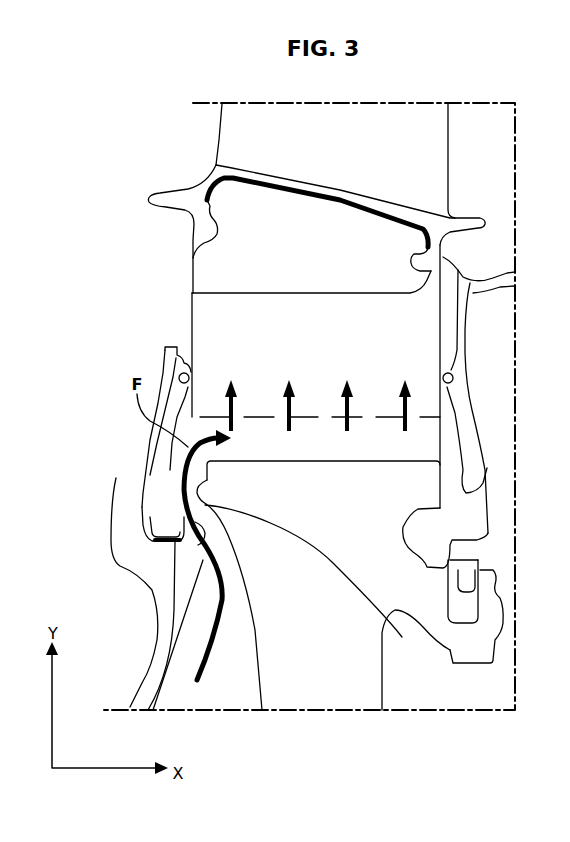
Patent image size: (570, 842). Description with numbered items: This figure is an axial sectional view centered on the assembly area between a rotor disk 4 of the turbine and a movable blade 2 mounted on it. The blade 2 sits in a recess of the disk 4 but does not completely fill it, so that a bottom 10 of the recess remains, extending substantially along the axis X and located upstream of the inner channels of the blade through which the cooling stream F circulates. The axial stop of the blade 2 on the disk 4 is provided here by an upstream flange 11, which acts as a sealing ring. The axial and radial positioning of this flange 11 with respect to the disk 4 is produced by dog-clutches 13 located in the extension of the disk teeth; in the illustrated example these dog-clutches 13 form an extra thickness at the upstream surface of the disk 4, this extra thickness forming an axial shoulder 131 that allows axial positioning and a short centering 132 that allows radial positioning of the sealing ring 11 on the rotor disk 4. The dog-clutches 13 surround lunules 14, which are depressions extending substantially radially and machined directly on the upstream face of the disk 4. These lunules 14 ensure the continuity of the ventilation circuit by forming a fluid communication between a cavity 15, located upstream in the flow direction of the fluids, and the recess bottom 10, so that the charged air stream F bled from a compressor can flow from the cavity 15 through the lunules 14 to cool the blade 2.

The movable blade 2 is at (422, 152).
The rotor disk 4 is at (330, 663).
The recess bottom 10 is at (303, 447).
The upstream flange 11 is at (160, 657).
The dog-clutch 13 is at (173, 480).
The axial shoulder 131 is at (187, 517).
The short centering 132 is at (167, 541).
The lunule 14 is at (342, 571).
The cavity 15 is at (222, 660).